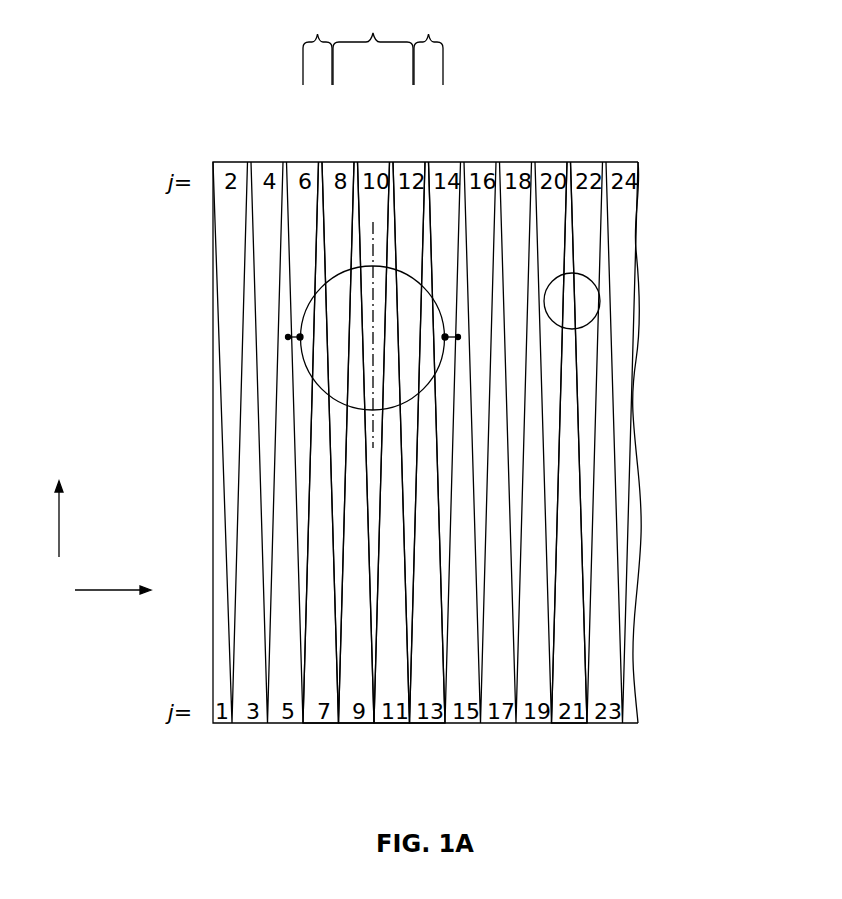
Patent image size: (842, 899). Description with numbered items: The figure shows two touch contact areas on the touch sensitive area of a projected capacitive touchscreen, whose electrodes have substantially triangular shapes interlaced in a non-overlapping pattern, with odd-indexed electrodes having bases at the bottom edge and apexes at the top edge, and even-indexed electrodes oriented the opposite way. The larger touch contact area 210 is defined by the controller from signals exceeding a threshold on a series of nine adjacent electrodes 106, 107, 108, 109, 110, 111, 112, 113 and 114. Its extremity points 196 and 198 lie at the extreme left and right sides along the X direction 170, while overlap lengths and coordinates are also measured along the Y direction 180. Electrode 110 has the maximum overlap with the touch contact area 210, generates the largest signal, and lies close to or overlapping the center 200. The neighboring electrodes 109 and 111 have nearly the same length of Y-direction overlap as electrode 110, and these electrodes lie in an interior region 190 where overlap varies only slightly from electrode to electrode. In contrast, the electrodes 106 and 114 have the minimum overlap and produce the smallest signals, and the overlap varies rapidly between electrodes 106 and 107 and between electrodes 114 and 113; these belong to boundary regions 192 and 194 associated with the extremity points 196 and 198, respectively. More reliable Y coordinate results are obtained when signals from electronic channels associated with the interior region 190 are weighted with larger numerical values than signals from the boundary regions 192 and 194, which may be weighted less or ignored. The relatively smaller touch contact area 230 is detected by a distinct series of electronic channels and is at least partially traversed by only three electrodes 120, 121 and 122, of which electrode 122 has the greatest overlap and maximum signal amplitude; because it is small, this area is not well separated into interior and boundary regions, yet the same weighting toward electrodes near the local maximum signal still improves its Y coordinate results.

The electrode 106 is at (300, 161).
The electrode 107 is at (313, 724).
The electrode 108 is at (335, 161).
The electrode 109 is at (355, 724).
The electrode 110 is at (377, 161).
The electrode 111 is at (390, 724).
The electrode 112 is at (411, 161).
The electrode 113 is at (432, 724).
The electrode 114 is at (447, 161).
The electrode 120 is at (555, 161).
The electrode 121 is at (570, 724).
The electrode 122 is at (593, 161).
The X direction 170 is at (108, 592).
The Y direction 180 is at (60, 527).
The interior region 190 is at (373, 42).
The boundary region 192 is at (316, 44).
The boundary region 194 is at (430, 44).
The extremity point 196 is at (288, 337).
The extremity point 198 is at (458, 338).
The center 200 is at (373, 250).
The touch contact area 210 is at (306, 306).
The touch contact area 230 is at (602, 302).